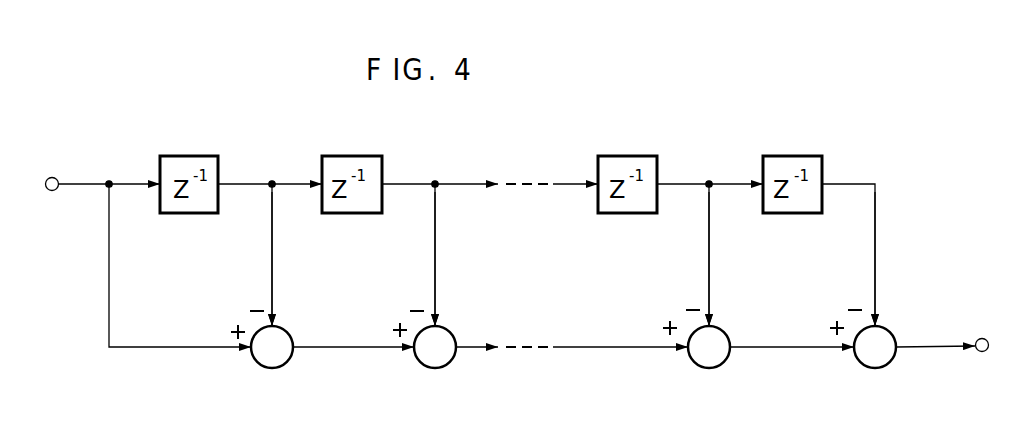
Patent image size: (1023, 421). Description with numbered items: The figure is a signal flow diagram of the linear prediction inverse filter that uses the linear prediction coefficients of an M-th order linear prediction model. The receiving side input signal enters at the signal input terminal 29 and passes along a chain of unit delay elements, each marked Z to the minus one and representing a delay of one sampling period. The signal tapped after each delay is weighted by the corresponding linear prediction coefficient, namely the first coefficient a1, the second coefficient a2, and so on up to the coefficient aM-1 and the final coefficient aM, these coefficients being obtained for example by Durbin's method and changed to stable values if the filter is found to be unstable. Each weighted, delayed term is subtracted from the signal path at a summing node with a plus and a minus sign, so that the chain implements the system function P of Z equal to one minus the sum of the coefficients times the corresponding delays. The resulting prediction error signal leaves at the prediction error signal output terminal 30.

The signal input terminal 29 is at (50, 177).
The prediction error signal output terminal 30 is at (985, 338).
The linear prediction coefficient a1 is at (284, 259).
The linear prediction coefficient a2 is at (447, 259).
The linear prediction coefficient aM-1 is at (730, 259).
The linear prediction coefficient aM is at (890, 259).